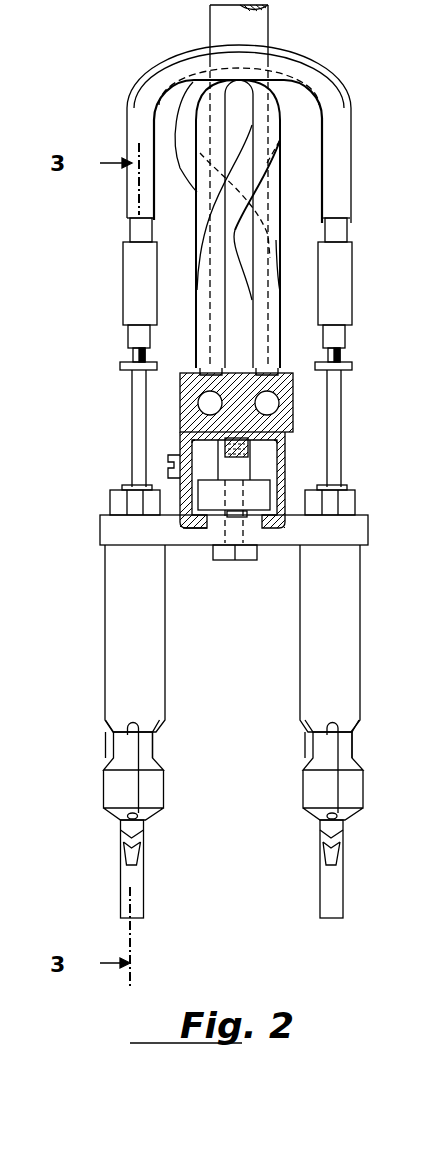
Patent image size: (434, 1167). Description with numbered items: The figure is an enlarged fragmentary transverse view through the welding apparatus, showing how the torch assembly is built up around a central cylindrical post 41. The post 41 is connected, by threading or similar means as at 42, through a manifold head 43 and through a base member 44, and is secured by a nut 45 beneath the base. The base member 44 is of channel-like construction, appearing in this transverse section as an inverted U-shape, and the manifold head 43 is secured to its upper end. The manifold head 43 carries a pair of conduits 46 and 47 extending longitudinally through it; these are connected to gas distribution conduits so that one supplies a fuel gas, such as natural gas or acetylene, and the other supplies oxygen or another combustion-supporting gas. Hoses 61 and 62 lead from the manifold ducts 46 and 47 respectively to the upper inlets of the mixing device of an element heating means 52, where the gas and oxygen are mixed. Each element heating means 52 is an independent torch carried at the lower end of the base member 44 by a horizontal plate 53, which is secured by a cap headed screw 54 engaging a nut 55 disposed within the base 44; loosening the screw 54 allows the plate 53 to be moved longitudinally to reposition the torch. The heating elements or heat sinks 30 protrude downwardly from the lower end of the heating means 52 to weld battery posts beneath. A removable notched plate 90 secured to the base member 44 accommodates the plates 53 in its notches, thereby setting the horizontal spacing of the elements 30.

The heating element 30 is at (125, 876).
The post 41 is at (256, 25).
The threading 42 is at (289, 428).
The manifold head 43 is at (186, 377).
The base member 44 is at (283, 463).
The nut 45 is at (258, 467).
The conduit 46 is at (197, 402).
The conduit 47 is at (280, 404).
The element heating means 52 is at (128, 651).
The horizontal plate 53 is at (110, 527).
The cap headed screw 54 is at (247, 556).
The nut 55 is at (222, 500).
The hose 61 is at (174, 52).
The hose 62 is at (143, 92).
The plate 90 is at (180, 520).